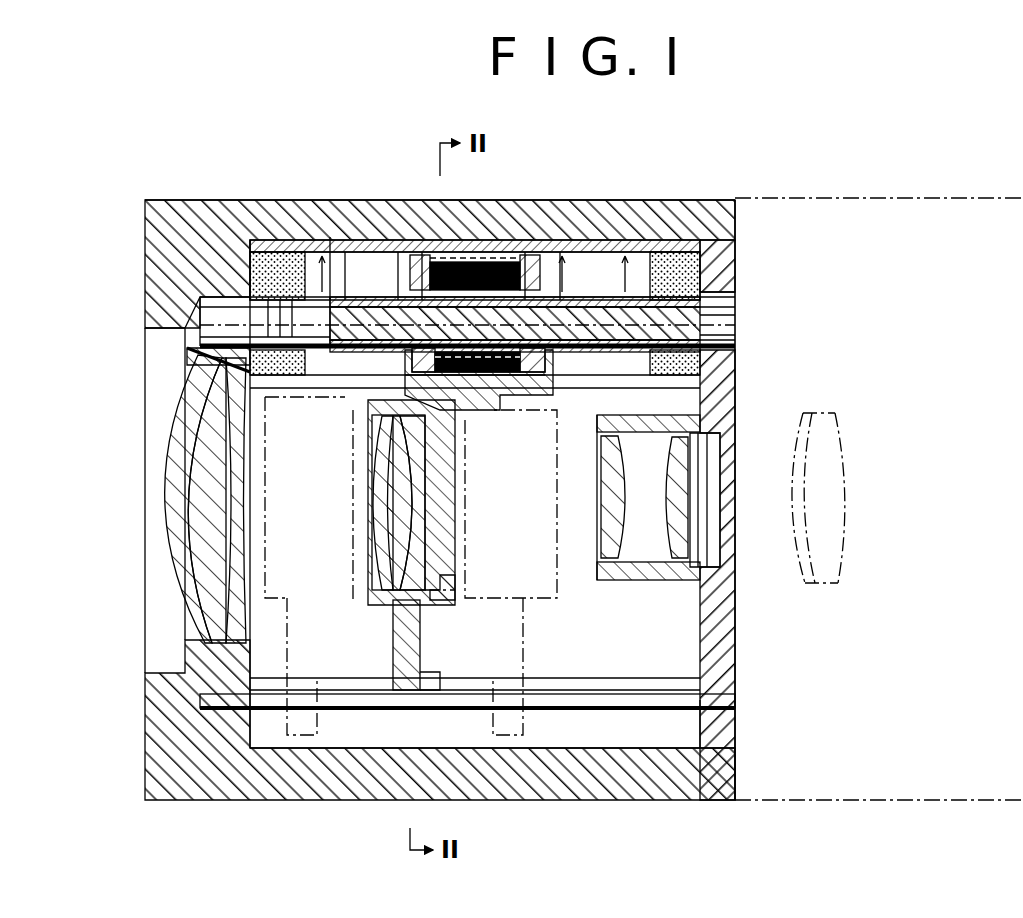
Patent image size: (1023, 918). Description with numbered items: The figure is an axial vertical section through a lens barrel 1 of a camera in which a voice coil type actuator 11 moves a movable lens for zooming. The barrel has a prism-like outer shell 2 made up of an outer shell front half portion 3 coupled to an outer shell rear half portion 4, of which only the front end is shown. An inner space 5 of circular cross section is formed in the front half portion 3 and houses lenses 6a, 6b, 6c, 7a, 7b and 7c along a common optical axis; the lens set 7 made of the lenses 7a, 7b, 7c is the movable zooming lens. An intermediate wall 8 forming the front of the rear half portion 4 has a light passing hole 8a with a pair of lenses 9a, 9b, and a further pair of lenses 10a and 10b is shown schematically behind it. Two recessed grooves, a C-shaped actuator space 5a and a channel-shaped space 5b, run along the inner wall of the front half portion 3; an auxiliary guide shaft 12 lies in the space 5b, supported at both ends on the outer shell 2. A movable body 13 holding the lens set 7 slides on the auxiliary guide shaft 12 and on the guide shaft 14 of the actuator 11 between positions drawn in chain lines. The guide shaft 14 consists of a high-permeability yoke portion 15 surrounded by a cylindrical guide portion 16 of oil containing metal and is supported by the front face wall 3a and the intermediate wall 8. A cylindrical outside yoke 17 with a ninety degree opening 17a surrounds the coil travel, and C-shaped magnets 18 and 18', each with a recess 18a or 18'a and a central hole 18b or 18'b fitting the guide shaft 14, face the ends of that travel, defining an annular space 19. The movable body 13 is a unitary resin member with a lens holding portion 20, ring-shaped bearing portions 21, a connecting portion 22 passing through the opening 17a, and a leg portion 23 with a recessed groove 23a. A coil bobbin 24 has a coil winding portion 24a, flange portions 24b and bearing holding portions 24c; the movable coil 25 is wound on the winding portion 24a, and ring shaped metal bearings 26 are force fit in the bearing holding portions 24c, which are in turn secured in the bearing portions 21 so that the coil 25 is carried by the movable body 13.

The lens barrel 1 is at (192, 180).
The outer shell 2 is at (735, 166).
The outer shell front half portion 3 is at (660, 222).
The front face wall 3a is at (205, 295).
The outer shell rear half portion 4 is at (714, 222).
The inner space 5 is at (582, 627).
The actuator receiving space 5a is at (332, 237).
The guide space 5b is at (352, 756).
The lens 6a is at (190, 443).
The lens 6b is at (205, 487).
The lens 6c is at (228, 537).
The lens set 7 is at (302, 450).
The lens 7a is at (380, 470).
The lens 7b is at (398, 505).
The lens 7c is at (415, 533).
The intermediate wall 8 is at (710, 652).
The light passing hole 8a is at (663, 670).
The rear lens element 9a is at (618, 512).
The rear plate 9b is at (700, 483).
The lens 10a is at (796, 552).
The lens 10b is at (845, 525).
The voice coil type actuator 11 is at (255, 265).
The auxiliary guide shaft 12 is at (630, 708).
The movable body 13 is at (312, 632).
The guide shaft 14 is at (215, 315).
The yoke portion 15 is at (340, 250).
The guide portion 16 is at (352, 300).
The outside yoke 17 is at (588, 242).
The recess 17a is at (733, 388).
The magnet 18 is at (199, 274).
The recess 18a is at (255, 372).
The hole 18b is at (210, 305).
The magnet 18' is at (722, 264).
The recess 18'a is at (728, 356).
The hole 18'b is at (755, 300).
The space 19 is at (582, 280).
The lens holding portion 20 is at (455, 590).
The bearing portion 21 is at (422, 240).
The connecting portion 22 is at (488, 410).
The leg portion 23 is at (393, 661).
The recessed groove 23a is at (438, 682).
The coil bobbin 24 is at (473, 410).
The coil winding portion 24a is at (477, 410).
The flange portion 24b is at (480, 410).
The bearing holding portion 24c is at (400, 372).
The movable coil 25 is at (462, 258).
The metal bearing 26 is at (403, 252).